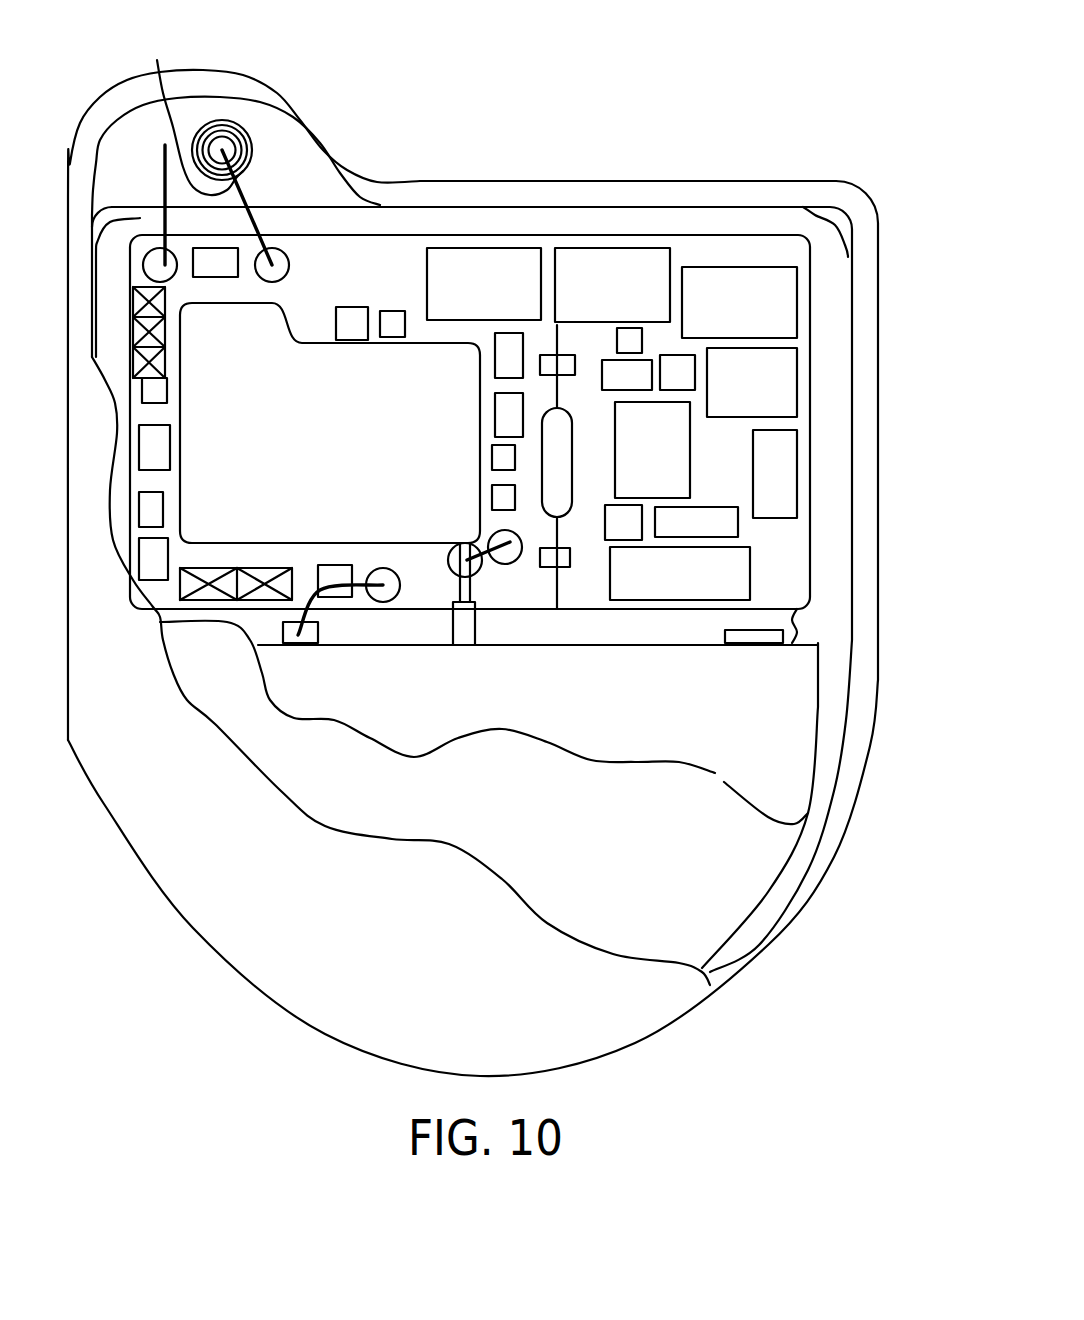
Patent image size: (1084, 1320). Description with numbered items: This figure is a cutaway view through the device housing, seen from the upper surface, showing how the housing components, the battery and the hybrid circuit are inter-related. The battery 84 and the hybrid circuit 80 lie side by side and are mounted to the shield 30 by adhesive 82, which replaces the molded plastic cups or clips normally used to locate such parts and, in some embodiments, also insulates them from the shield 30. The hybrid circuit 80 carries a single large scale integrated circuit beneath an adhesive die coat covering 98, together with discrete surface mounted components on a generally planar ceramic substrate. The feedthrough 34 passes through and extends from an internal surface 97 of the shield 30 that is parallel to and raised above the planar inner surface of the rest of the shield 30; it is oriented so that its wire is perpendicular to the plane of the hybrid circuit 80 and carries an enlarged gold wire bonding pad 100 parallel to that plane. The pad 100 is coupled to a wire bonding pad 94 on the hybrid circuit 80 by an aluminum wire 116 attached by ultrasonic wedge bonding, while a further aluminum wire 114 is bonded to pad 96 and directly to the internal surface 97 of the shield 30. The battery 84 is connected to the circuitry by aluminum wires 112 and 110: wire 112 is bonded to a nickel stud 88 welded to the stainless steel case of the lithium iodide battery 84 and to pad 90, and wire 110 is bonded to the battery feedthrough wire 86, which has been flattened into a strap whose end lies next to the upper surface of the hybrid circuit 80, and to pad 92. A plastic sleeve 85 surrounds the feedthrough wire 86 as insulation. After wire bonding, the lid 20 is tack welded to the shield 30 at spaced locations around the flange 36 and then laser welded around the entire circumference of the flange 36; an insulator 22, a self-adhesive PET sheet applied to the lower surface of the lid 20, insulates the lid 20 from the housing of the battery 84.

The lid 20 is at (617, 1007).
The insulator 22 is at (750, 870).
The shield 30 is at (890, 691).
The feedthrough 34 is at (227, 120).
The flange 36 is at (683, 185).
The hybrid circuit 80 is at (762, 248).
The adhesive 82 is at (832, 323).
The battery 84 is at (793, 730).
The plastic sleeve 85 is at (463, 645).
The feedthrough wire 86 is at (460, 583).
The nickel stud 88 is at (308, 633).
The pad 90 is at (385, 602).
The pad 92 is at (520, 560).
The wire bonding pad 94 is at (289, 262).
The pad 96 is at (162, 282).
The internal surface 97 is at (300, 190).
The adhesive die coat covering 98 is at (263, 445).
The gold wire bonding pad 100 is at (228, 145).
The aluminum wire 110 is at (492, 535).
The aluminum wire 112 is at (360, 585).
The aluminum wire 114 is at (160, 157).
The aluminum wire 116 is at (200, 113).